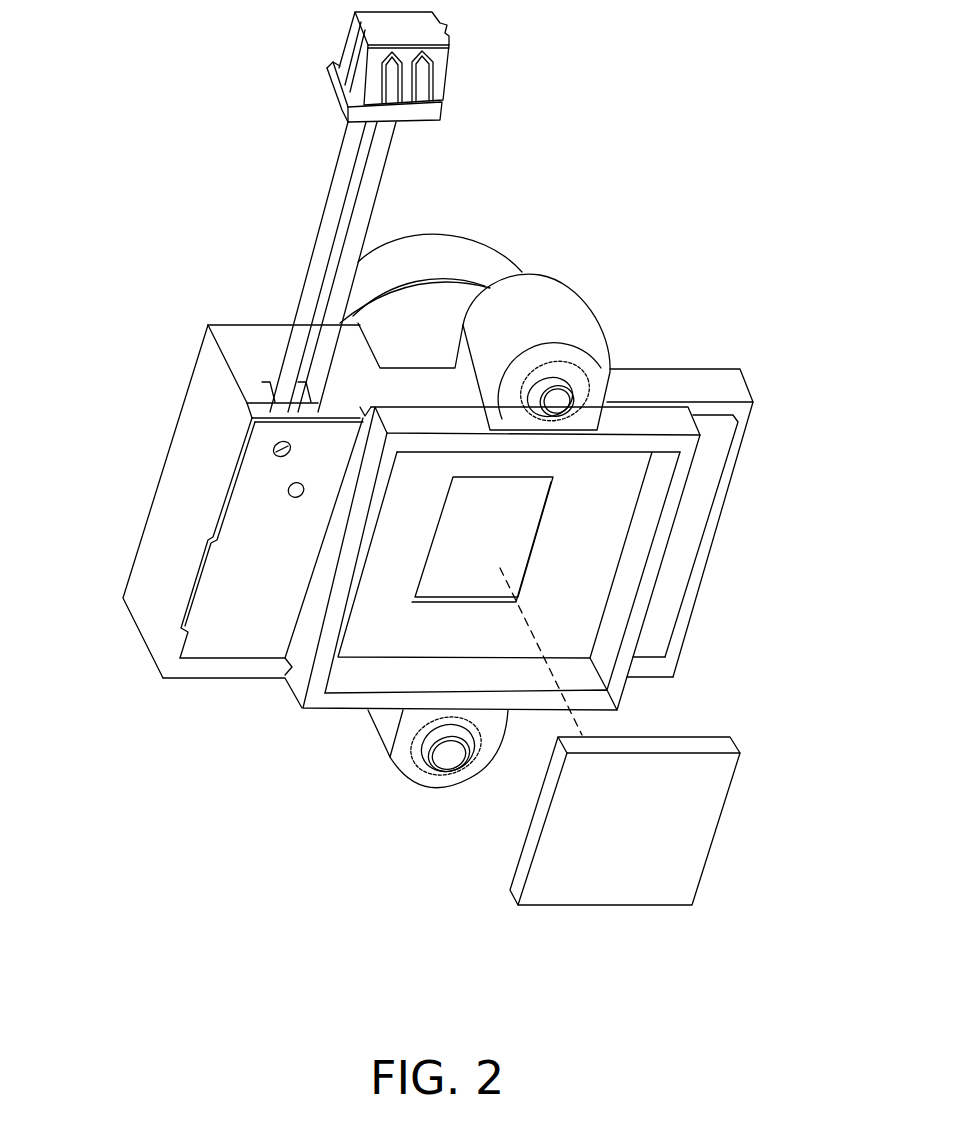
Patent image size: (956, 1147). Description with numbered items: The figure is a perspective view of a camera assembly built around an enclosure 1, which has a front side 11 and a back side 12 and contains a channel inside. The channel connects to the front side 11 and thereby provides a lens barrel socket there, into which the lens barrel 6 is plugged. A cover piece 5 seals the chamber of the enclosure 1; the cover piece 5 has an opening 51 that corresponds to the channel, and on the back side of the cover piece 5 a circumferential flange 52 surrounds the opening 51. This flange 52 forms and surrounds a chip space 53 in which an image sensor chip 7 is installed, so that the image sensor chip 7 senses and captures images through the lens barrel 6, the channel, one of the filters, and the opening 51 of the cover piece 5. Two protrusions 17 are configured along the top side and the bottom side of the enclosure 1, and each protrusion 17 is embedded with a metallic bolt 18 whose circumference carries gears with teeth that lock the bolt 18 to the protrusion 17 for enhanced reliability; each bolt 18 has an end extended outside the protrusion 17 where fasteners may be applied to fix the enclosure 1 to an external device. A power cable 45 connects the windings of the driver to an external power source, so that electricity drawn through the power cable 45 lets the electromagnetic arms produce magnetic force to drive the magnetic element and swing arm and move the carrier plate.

The enclosure 1 is at (748, 380).
The front side 11 is at (137, 557).
The back side 12 is at (202, 668).
The power cable 45 is at (313, 273).
The cover piece 5 is at (678, 570).
The opening 51 is at (453, 572).
The circumferential flange 52 is at (630, 633).
The chip space 53 is at (618, 488).
The lens barrel 6 is at (482, 260).
The image sensor chip 7 is at (655, 845).
The protrusion 17 is at (562, 320).
The metallic bolt 18 is at (585, 388).